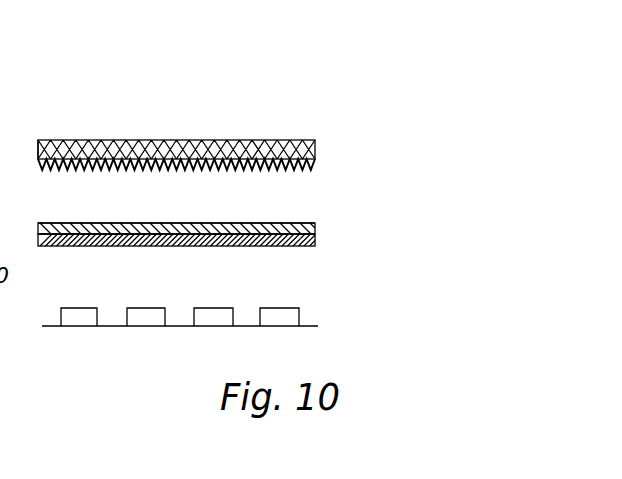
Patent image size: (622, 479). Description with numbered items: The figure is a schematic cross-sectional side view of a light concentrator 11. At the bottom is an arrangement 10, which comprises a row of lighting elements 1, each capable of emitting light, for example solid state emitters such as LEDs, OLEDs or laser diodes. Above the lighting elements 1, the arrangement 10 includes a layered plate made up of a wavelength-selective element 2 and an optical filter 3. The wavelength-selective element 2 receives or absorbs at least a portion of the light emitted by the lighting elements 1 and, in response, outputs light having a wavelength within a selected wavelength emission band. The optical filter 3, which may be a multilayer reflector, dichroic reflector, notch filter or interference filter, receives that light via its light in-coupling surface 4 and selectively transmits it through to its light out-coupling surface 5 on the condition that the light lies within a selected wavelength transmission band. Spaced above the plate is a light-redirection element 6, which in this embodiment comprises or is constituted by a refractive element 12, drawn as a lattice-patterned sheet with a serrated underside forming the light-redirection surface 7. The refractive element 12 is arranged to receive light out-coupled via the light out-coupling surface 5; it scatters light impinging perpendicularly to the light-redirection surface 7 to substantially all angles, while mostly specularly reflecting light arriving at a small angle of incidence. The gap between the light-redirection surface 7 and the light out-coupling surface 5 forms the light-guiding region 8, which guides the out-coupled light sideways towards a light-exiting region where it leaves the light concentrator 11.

The lighting elements 1 is at (97, 318).
The wavelength-selective element 2 is at (166, 237).
The optical filter 3 is at (40, 230).
The light in-coupling surface 4 is at (92, 236).
The light out-coupling surface 5 is at (46, 223).
The light-redirection element 6 is at (92, 150).
The light-redirection surface 7 is at (152, 161).
The light-guiding region 8 is at (176, 136).
The arrangement 10 is at (323, 223).
The light concentrator 11 is at (317, 104).
The refractive element 12 is at (38, 159).